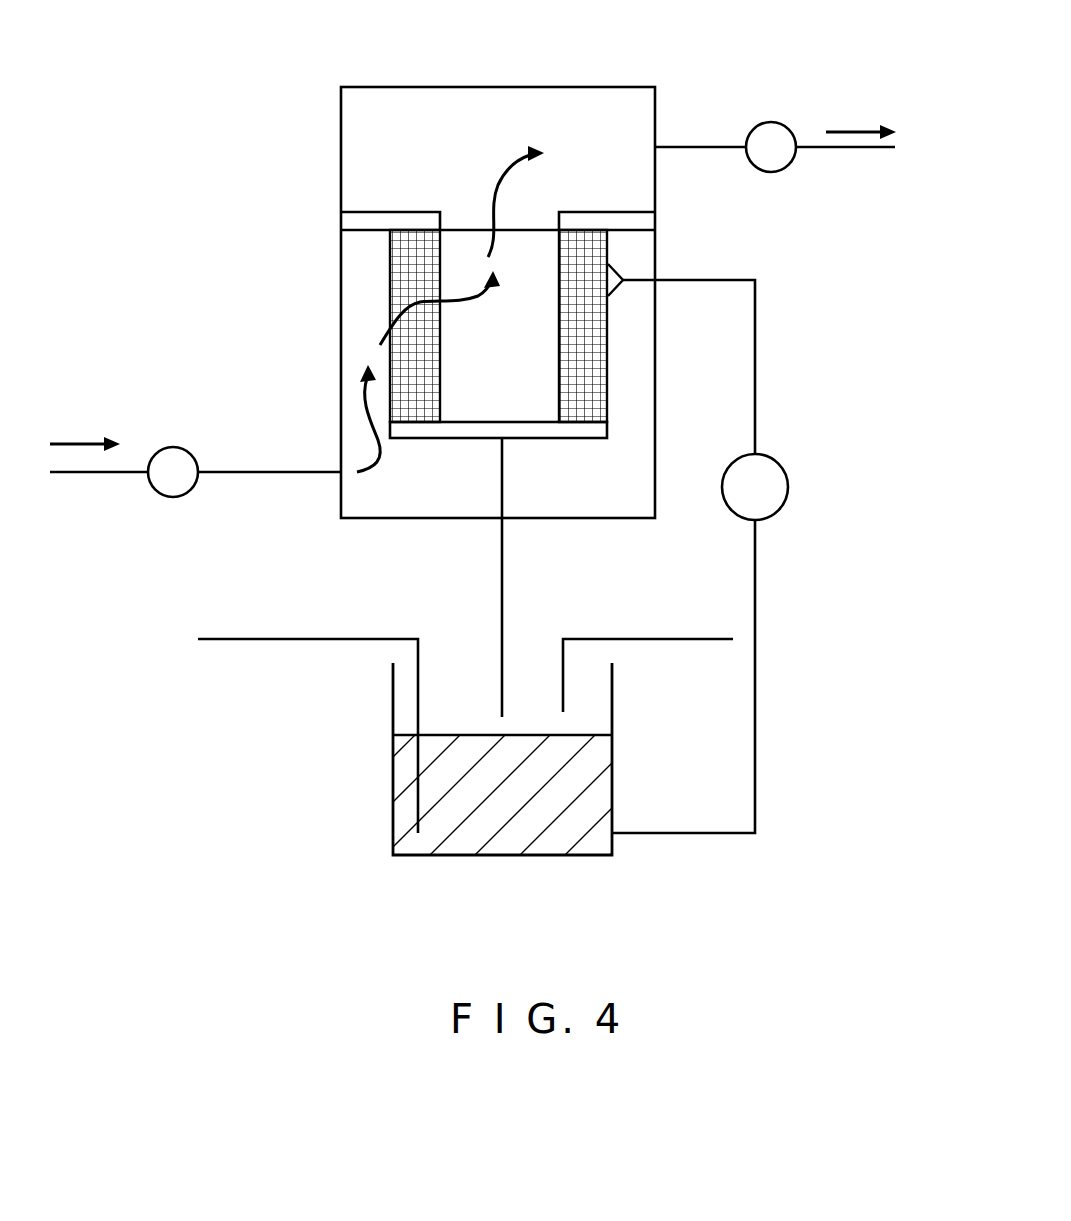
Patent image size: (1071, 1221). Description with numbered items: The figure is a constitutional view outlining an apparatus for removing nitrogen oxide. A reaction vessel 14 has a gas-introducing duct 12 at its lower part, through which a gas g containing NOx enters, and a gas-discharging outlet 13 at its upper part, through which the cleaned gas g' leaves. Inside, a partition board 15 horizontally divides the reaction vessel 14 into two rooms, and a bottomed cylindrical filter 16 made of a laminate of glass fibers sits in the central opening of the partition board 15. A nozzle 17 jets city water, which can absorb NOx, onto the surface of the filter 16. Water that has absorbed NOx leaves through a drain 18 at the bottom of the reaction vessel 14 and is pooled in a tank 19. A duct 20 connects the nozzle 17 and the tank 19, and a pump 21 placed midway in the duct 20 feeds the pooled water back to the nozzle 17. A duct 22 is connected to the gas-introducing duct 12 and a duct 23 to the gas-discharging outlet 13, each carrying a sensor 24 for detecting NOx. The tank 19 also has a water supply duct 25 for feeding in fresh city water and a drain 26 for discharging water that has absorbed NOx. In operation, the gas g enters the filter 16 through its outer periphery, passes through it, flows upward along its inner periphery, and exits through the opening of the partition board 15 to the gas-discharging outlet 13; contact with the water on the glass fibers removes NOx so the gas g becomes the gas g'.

The gas-introducing duct 12 is at (341, 472).
The gas-discharging outlet 13 is at (655, 147).
The reaction vessel 14 is at (336, 115).
The partition board 15 is at (375, 222).
The bottomed cylindrical filter 16 is at (398, 285).
The nozzle 17 is at (622, 278).
The drain 18 is at (502, 600).
The tank 19 is at (612, 695).
The duct 20 is at (755, 325).
The pump 21 is at (770, 457).
The duct 22 is at (100, 472).
The duct 23 is at (842, 147).
The sensor 24 is at (173, 447).
The water supply duct 25 is at (697, 639).
The drain 26 is at (263, 639).
The gas containing NOx g is at (276, 387).
The gas from which NOx has been removed g' is at (695, 138).